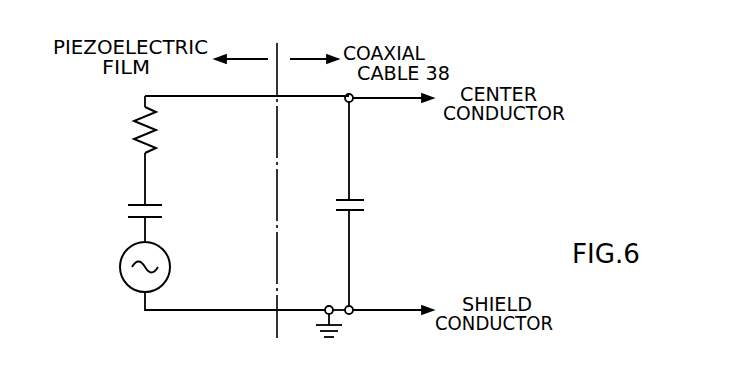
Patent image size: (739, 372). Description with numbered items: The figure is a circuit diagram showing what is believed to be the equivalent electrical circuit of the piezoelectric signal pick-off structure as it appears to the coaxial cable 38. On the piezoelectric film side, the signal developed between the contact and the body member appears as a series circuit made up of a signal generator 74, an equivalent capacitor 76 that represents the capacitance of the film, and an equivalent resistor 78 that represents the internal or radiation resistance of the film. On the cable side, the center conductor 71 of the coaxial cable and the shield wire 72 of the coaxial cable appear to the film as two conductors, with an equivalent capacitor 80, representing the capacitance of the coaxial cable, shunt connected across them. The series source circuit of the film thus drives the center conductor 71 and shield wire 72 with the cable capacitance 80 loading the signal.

The coaxial cable 38 is at (400, 184).
The center conductor 71 is at (375, 100).
The shield wire 72 is at (372, 309).
The signal generator 74 is at (171, 269).
The equivalent capacitor 76 is at (153, 207).
The equivalent resistor 78 is at (157, 134).
The equivalent capacitor 80 is at (358, 199).